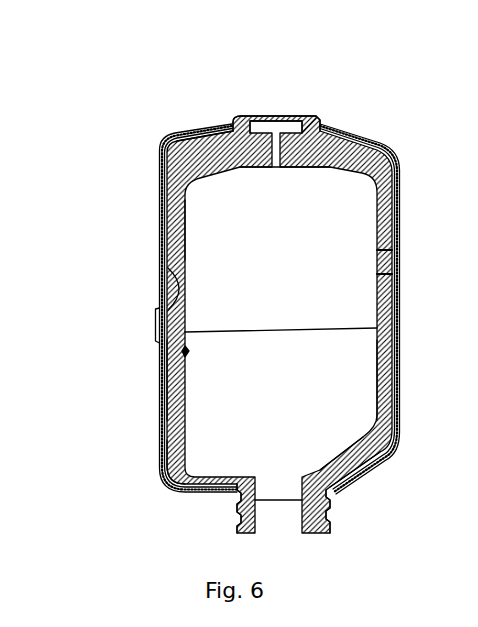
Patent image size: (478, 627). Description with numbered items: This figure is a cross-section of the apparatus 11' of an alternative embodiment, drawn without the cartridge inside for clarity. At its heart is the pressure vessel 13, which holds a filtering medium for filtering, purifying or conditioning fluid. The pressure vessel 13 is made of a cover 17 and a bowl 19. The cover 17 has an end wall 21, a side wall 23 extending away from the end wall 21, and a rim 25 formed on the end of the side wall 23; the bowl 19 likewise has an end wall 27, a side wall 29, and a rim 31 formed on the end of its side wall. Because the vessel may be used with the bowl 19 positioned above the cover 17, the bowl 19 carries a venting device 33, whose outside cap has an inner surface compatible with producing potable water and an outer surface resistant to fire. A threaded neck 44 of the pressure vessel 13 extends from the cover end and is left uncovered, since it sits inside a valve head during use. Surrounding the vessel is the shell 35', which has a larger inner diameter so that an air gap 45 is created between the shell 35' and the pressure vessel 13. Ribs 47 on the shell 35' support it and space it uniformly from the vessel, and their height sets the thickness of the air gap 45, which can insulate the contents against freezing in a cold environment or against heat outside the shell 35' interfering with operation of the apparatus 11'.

The apparatus 11' is at (256, 293).
The pressure vessel 13 is at (400, 243).
The cover 17 is at (383, 390).
The bowl 19 is at (402, 267).
The end wall 21 is at (360, 482).
The side wall 23 is at (162, 451).
The rim 25 is at (173, 275).
The end wall 27 is at (230, 156).
The side wall 29 is at (177, 237).
The rim 31 is at (185, 355).
The venting device 33 is at (317, 118).
The shell 35' is at (262, 309).
The threaded neck 44 is at (232, 507).
The air gap 45 is at (172, 373).
The ribs 47 is at (208, 152).